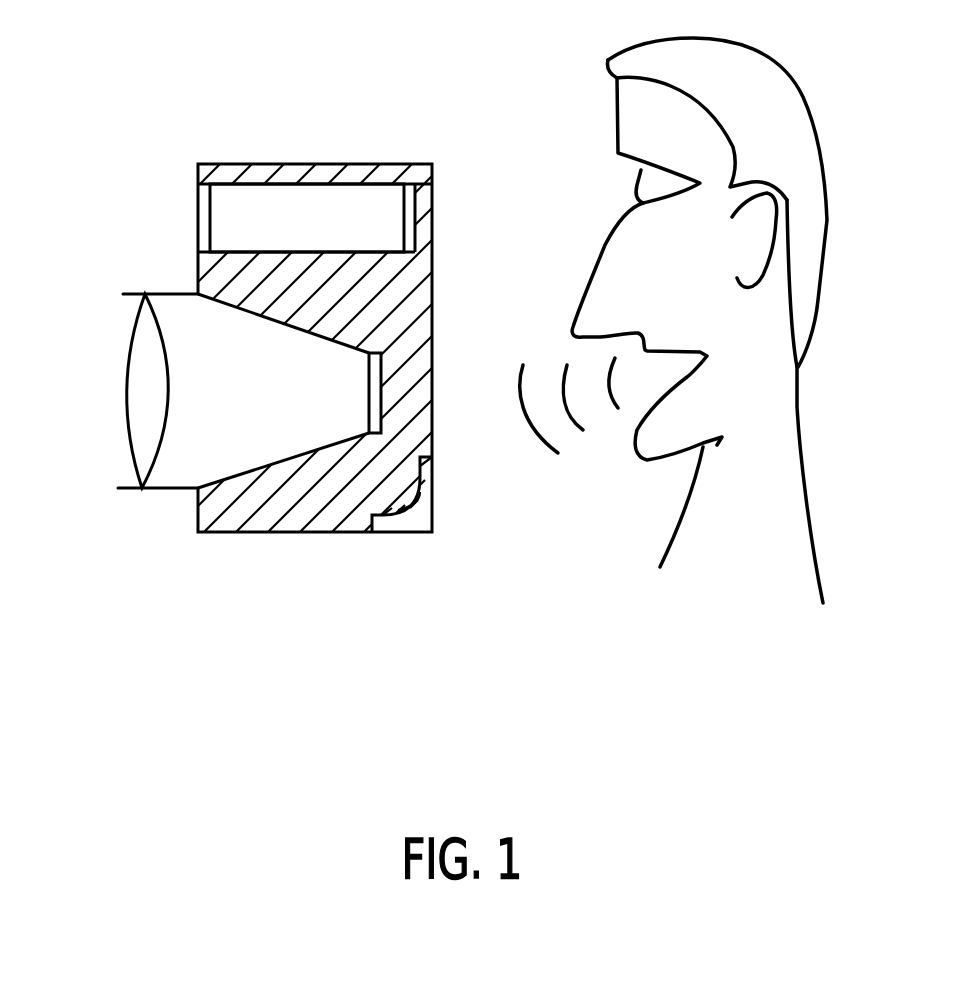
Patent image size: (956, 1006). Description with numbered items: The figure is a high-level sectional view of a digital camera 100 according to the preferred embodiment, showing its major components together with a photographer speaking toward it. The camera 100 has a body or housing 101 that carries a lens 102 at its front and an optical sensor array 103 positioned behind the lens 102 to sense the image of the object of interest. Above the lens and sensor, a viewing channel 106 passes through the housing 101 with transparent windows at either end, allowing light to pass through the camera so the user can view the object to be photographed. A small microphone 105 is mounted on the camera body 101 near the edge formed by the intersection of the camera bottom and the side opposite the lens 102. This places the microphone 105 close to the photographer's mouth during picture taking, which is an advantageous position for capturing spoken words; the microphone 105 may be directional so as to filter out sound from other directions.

The camera 100 is at (398, 299).
The body or housing 101 is at (298, 518).
The lens 102 is at (127, 413).
The optical sensor array 103 is at (369, 396).
The microphone 105 is at (432, 500).
The viewing channel 106 is at (285, 225).